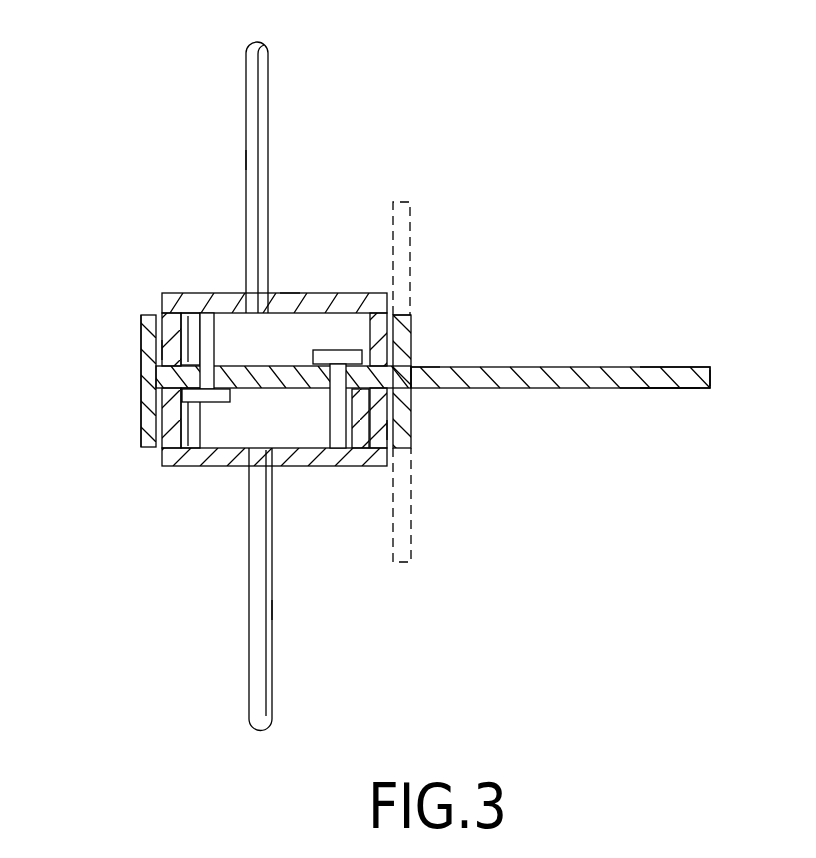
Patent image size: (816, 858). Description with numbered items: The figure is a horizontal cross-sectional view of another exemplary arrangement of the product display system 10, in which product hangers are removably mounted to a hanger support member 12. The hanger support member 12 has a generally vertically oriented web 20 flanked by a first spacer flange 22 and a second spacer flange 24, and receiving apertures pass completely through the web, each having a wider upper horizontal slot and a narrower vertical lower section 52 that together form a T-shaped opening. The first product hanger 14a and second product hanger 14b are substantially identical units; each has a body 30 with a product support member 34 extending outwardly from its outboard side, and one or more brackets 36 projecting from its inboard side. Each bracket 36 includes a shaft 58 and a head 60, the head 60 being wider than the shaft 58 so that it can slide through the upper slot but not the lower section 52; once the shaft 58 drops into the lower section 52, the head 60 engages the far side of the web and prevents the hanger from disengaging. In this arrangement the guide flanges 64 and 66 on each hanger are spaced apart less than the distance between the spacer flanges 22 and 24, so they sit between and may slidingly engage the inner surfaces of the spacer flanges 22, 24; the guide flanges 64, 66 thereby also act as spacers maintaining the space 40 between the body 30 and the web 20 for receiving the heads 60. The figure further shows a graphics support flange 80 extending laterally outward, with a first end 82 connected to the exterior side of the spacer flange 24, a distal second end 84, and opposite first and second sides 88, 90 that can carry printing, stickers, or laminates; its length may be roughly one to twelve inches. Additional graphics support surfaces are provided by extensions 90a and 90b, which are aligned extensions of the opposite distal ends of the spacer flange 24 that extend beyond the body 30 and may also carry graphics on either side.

The product display system 10 is at (492, 633).
The hanger support member 12 is at (141, 392).
The first product hanger 14a is at (273, 659).
The second product hanger 14b is at (248, 115).
The web 20 is at (286, 293).
The first spacer flange 22 is at (141, 315).
The second spacer flange 24 is at (405, 313).
The body 30 is at (310, 293).
The product support member 34 is at (246, 155).
The bracket 36 is at (328, 350).
The space 40 is at (270, 351).
The lower section 52 is at (187, 312).
The shaft 58 is at (214, 293).
The head 60 is at (340, 350).
The guide flange 64 is at (398, 330).
The guide flange 66 is at (173, 342).
The graphics support flange 80 is at (560, 367).
The first end 82 is at (412, 367).
The second end 84 is at (711, 372).
The first side 88 is at (655, 367).
The second side 90 is at (657, 388).
The extension 90a is at (412, 200).
The extension 90b is at (413, 508).